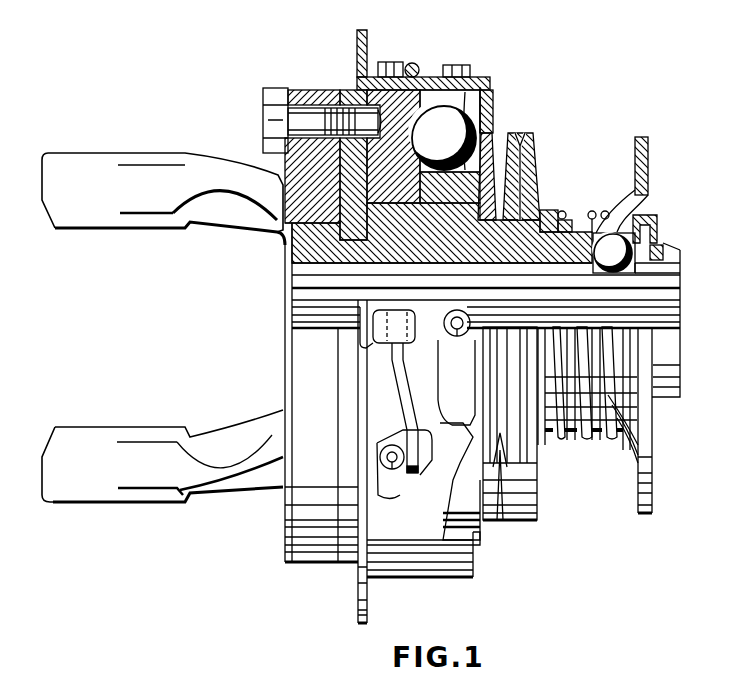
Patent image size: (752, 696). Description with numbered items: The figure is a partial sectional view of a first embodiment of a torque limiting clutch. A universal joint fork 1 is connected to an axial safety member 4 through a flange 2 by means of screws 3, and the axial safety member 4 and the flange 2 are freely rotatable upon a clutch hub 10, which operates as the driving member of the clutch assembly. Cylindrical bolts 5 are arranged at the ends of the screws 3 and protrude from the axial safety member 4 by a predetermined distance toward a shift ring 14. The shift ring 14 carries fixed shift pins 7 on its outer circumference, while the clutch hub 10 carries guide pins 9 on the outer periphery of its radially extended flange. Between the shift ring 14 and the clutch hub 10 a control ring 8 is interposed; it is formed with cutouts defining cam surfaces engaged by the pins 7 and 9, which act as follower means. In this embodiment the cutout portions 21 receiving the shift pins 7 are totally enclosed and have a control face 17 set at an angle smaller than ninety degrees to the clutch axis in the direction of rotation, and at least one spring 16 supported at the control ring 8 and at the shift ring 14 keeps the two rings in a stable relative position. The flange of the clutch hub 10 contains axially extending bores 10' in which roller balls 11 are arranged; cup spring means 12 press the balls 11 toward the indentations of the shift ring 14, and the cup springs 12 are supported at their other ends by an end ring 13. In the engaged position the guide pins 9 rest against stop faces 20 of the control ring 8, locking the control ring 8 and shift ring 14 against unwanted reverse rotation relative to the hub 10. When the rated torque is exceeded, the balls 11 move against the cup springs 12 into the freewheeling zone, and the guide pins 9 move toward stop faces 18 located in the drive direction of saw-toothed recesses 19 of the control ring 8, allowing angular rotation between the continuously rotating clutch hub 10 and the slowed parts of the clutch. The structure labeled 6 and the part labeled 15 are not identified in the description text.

The universal joint fork 1 is at (105, 167).
The flange 2 is at (280, 173).
The screws 3 is at (263, 95).
The axial safety member 4 is at (345, 92).
The cylindrical bolts 5 is at (355, 83).
The angle bracket 6 is at (365, 43).
The shift pins 7 is at (387, 60).
The control ring 8 is at (417, 63).
The guide pins 9 is at (460, 68).
The clutch hub 10 is at (489, 99).
The bores 10' is at (516, 77).
The roller balls 11 is at (458, 127).
The cup spring means 12 is at (520, 133).
The end ring 13 is at (553, 207).
The shift ring 14 is at (370, 203).
The clip 15 is at (373, 333).
The spring 16 is at (403, 400).
The control face 17 is at (377, 457).
The stop faces 18 is at (498, 520).
The saw-toothed recesses 19 is at (467, 387).
The stop faces 20 is at (493, 307).
The cutout portions 21 is at (430, 440).